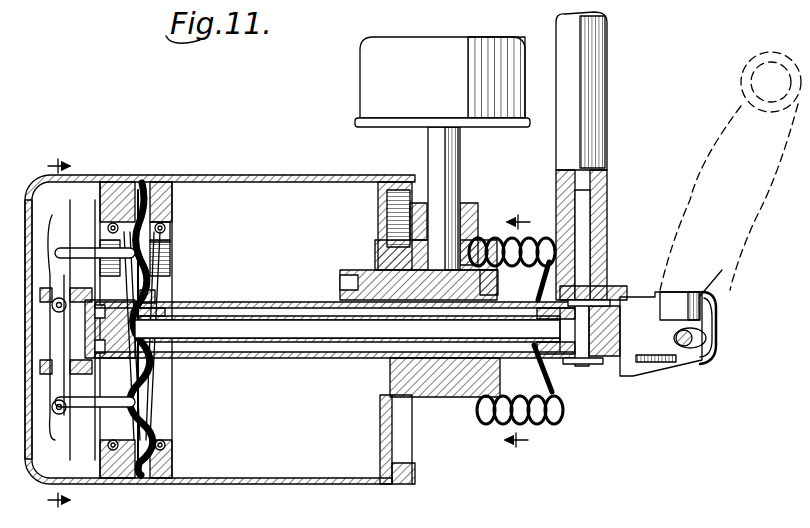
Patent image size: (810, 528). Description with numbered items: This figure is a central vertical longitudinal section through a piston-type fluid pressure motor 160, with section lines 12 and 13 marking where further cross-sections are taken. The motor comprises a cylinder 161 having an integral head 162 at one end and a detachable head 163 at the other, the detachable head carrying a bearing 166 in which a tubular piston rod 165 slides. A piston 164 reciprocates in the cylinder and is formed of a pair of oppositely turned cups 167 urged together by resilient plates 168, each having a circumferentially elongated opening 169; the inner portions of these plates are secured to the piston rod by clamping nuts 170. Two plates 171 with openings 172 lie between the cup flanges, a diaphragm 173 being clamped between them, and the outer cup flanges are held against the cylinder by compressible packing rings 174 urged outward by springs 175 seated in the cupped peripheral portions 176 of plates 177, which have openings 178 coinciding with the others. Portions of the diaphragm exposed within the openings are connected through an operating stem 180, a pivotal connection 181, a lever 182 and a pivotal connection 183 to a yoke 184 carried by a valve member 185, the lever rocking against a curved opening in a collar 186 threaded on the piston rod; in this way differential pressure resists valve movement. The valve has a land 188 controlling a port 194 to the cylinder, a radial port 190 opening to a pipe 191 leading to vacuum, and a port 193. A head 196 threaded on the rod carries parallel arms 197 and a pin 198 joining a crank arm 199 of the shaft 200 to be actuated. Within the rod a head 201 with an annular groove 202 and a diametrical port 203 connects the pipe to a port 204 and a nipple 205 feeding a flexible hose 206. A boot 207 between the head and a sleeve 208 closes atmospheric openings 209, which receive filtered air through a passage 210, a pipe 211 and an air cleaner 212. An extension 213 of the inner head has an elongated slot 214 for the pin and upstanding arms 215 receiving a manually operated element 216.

The section line 12- 12 is at (56, 335).
The section line 13- 13 is at (517, 331).
The fluid pressure motor 160 is at (276, 182).
The cylinder 161 is at (326, 182).
The integral head 162 is at (26, 195).
The detachable head 163 is at (380, 433).
The piston 164 is at (180, 240).
The tubular piston rod 165 is at (292, 302).
The bearing 166 is at (432, 397).
The cups 167 is at (110, 182).
The resilient plates 168 is at (182, 200).
The circumferentially elongated opening 169 is at (180, 262).
The clamping nuts 170 is at (180, 288).
The plates 171 is at (170, 422).
The openings 172 is at (178, 392).
The diaphragm 173 is at (170, 412).
The compressible packing rings 174 is at (98, 200).
The springs 175 is at (100, 242).
The cupped peripheral portions 176 is at (98, 222).
The plates 177 is at (170, 277).
The circumferentially elongated openings 178 is at (182, 226).
The operating stem 180 is at (80, 252).
The pivotal connection 181 is at (50, 265).
The lever 182 is at (68, 288).
The pivotal connection 183 is at (66, 380).
The yoke 184 is at (52, 275).
The valve member 185 is at (226, 303).
The collar 186 is at (62, 394).
The land 188 is at (153, 324).
The radial port 190 is at (112, 329).
The pipe 191 is at (313, 358).
The port 193 is at (200, 344).
The port 194 is at (180, 300).
The head 196 is at (636, 376).
The parallel arms 197 is at (662, 366).
The pin 198 is at (708, 352).
The crank arm 199 is at (730, 242).
The shaft 200 is at (748, 78).
The head 201 is at (613, 362).
The annular groove 202 is at (587, 366).
The diametrical port 203 is at (575, 368).
The port 204 is at (611, 286).
The nipple 205 is at (590, 254).
The flexible hose 206 is at (598, 178).
The boot 207 is at (531, 240).
The sleeve 208 is at (481, 420).
The atmospheric openings 209 is at (518, 298).
The passage 210 is at (470, 256).
The pipe 211 is at (462, 192).
The air cleaner 212 is at (358, 72).
The extension 213 is at (708, 318).
The elongated slot 214 is at (714, 330).
The upstanding arms 215 is at (710, 298).
The element 216 is at (685, 292).